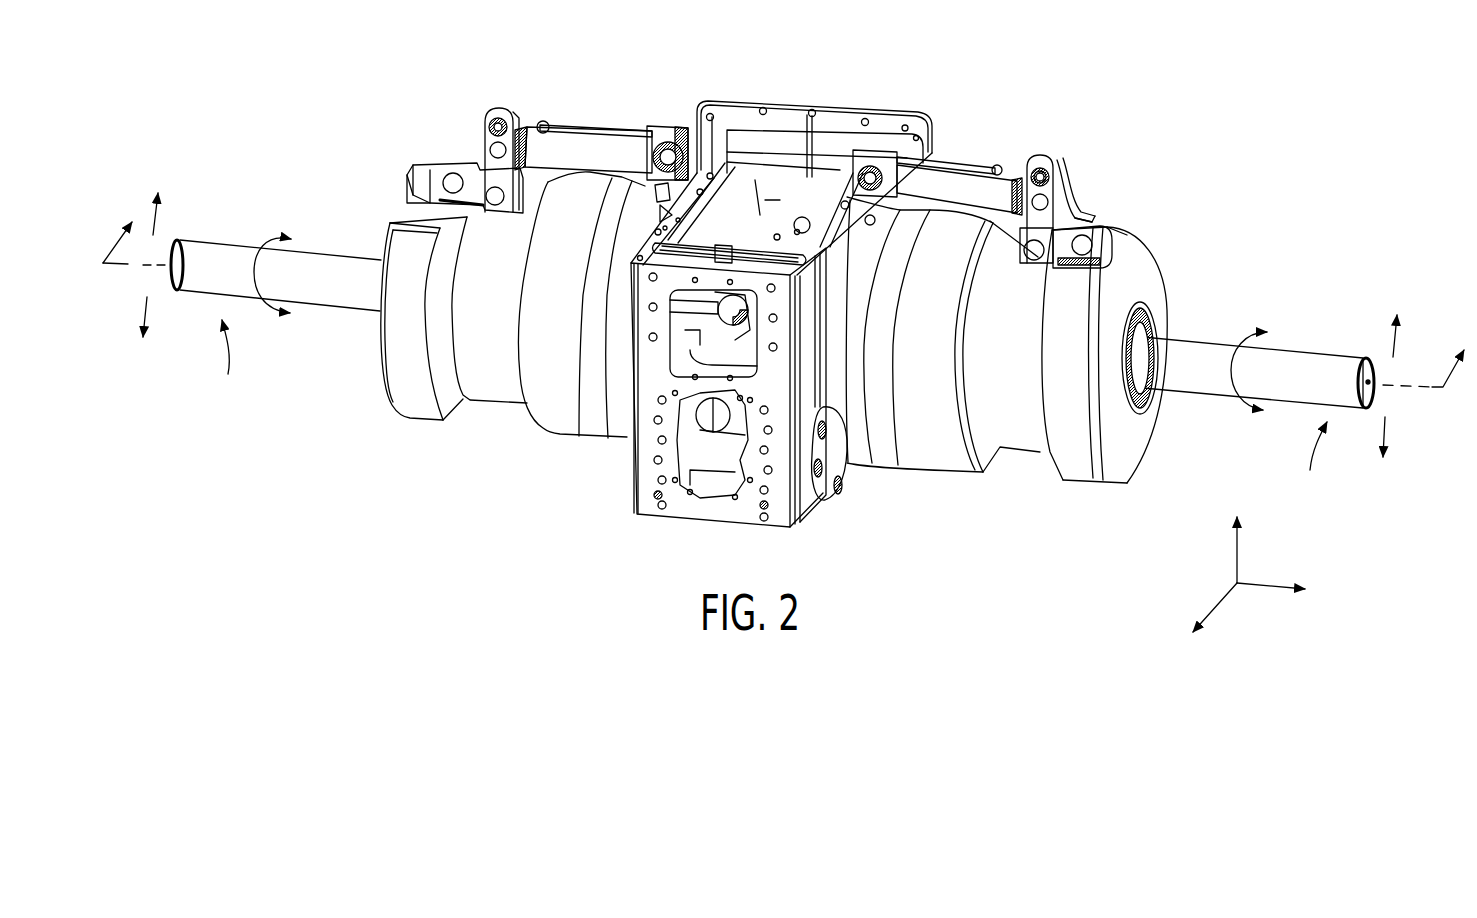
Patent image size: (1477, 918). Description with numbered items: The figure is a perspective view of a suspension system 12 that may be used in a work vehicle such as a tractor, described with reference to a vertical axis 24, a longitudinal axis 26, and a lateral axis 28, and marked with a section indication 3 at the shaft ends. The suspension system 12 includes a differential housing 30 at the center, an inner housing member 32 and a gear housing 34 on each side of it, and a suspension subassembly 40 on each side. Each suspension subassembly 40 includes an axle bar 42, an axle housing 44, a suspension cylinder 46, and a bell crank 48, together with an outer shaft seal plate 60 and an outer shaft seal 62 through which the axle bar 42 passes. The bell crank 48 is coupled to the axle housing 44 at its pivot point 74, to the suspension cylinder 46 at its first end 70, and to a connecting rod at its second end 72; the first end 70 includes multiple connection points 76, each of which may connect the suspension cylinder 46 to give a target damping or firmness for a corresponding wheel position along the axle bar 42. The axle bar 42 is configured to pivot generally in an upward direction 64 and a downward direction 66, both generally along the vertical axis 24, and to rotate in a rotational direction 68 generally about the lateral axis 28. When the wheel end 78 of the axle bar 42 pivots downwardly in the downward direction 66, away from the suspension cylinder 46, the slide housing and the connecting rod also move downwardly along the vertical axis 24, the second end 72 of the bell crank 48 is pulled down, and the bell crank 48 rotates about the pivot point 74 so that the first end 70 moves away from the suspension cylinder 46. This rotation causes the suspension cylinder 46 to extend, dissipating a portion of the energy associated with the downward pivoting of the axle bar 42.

The suspension system 12 is at (783, 348).
The section line / view direction 3 is at (783, 289).
The vertical axis 24 is at (1237, 560).
The longitudinal axis 26 is at (1218, 607).
The lateral axis 28 is at (1263, 584).
The differential housing 30 is at (871, 103).
The inner housing member 32 is at (618, 408).
The gear housing 34 is at (610, 427).
The suspension subassembly 40 is at (1180, 226).
The axle bar 42 is at (333, 303).
The axle housing 44 is at (428, 420).
The suspension cylinder 46 is at (573, 127).
The bell crank 48 is at (500, 108).
The outer shaft seal plate 60 is at (382, 388).
The outer shaft seal 62 is at (1155, 322).
The upward direction 64 is at (156, 222).
The downward direction 66 is at (150, 311).
The rotational direction 68 is at (265, 238).
The first end 70 is at (1040, 160).
The second end 72 is at (1103, 223).
The pivot point 74 is at (1078, 221).
The connection points 76 is at (1059, 162).
The wheel end 78 is at (773, 412).